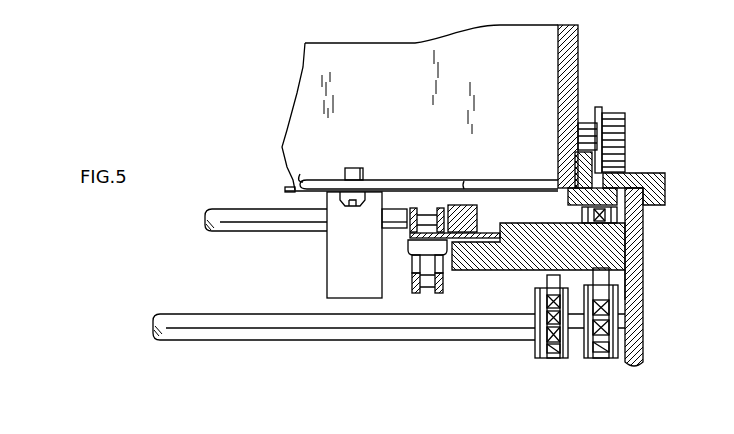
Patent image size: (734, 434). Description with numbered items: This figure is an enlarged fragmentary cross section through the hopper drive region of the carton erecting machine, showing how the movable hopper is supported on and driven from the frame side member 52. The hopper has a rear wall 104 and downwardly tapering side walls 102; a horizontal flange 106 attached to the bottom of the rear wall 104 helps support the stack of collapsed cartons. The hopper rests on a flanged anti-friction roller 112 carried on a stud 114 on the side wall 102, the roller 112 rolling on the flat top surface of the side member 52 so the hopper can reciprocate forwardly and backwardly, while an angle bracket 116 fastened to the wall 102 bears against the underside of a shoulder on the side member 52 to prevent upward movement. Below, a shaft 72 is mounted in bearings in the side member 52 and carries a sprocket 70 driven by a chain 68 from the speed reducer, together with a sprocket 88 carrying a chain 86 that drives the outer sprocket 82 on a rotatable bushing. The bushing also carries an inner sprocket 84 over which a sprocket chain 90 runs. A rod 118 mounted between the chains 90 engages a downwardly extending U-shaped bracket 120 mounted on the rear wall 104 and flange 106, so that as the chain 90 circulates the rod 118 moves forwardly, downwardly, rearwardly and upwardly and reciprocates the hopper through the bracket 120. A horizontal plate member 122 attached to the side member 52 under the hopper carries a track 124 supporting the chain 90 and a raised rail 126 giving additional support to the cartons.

The rear wall 104 is at (472, 43).
The side walls 102 is at (578, 39).
The studs 114 is at (583, 123).
The flanged anti-friction rollers 112 is at (625, 130).
The angle brackets 116 is at (618, 198).
The side member 52 is at (643, 262).
The chains 86 is at (620, 282).
The outer sprocket 82 is at (582, 213).
The raised rails 126 is at (480, 229).
The tracks 124 is at (452, 233).
The U-shaped brackets 120 is at (333, 272).
The rod 118 is at (247, 222).
The sprocket chains 90 is at (418, 256).
The horizontal flanges 106 is at (483, 185).
The inner sprocket 84 is at (408, 260).
The horizontal plate members 122 is at (491, 259).
The chain 68 is at (545, 295).
The shaft 72 is at (405, 332).
The sprocket 70 is at (553, 357).
The sprockets 88 is at (600, 353).